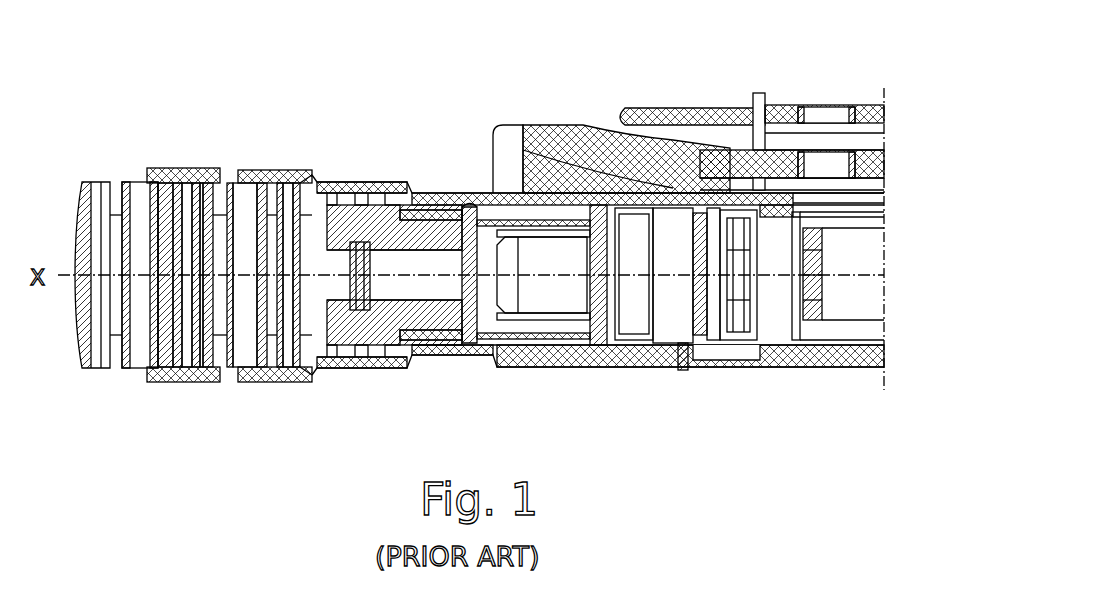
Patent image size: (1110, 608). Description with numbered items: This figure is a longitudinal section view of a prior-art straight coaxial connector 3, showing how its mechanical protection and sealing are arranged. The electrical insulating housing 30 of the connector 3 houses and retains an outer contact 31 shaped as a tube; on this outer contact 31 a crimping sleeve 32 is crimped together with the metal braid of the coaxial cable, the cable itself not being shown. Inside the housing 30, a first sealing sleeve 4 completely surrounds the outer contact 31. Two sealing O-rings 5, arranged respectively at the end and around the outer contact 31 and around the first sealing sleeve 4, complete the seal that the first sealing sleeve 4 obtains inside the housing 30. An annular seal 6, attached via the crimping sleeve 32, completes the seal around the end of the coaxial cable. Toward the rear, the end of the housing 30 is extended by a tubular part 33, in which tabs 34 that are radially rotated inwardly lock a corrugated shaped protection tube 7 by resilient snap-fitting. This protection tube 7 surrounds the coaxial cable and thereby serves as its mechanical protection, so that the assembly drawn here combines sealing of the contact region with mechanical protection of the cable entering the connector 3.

The coaxial connector 3 is at (382, 88).
The first sealing sleeve 4 is at (673, 320).
The sealing O-rings 5 is at (630, 367).
The annular seal 6 is at (365, 360).
The corrugated shaped protection tube 7 is at (137, 372).
The electrical insulating housing 30 is at (680, 188).
The outer contact 31 is at (533, 295).
The crimping sleeve 32 is at (485, 195).
The tubular part 33 is at (280, 165).
The tabs 34 is at (215, 170).